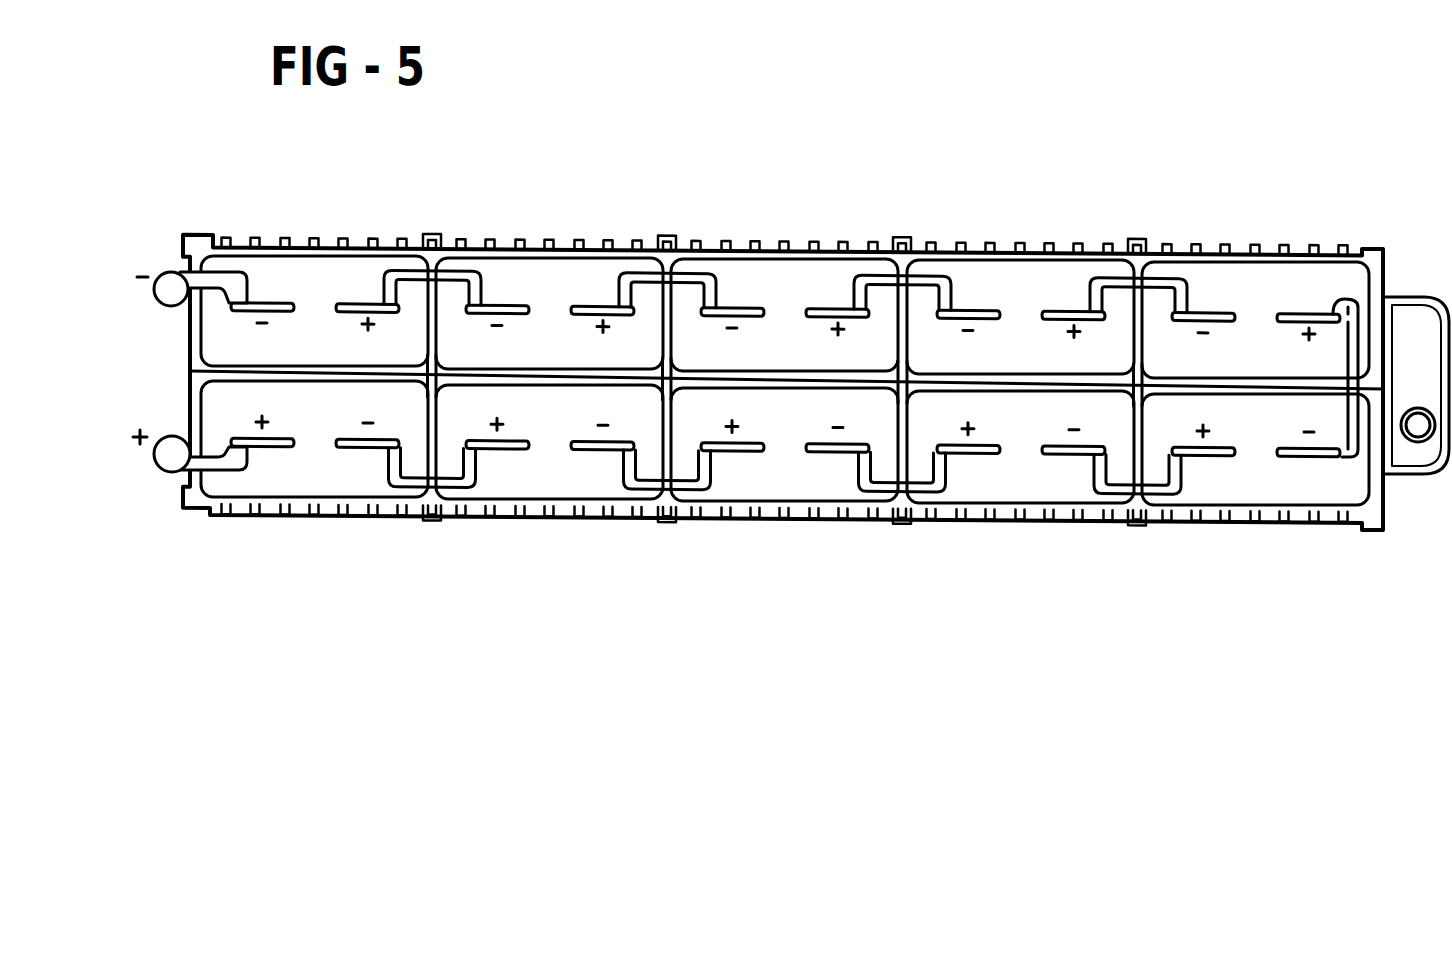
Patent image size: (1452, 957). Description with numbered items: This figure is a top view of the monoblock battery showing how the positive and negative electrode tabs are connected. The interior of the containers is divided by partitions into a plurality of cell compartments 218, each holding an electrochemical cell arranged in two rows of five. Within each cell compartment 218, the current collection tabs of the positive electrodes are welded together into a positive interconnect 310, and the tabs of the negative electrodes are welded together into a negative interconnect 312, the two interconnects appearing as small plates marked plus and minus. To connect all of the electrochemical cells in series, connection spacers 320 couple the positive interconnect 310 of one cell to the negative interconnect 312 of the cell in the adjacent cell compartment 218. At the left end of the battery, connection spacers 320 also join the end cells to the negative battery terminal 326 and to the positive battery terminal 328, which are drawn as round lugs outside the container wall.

The cell compartment 218 is at (550, 275).
The positive interconnect 310 is at (367, 300).
The negative interconnect 312 is at (268, 303).
The connection spacer 320 is at (218, 262).
The negative battery terminal 326 is at (166, 272).
The positive battery terminal 328 is at (162, 475).